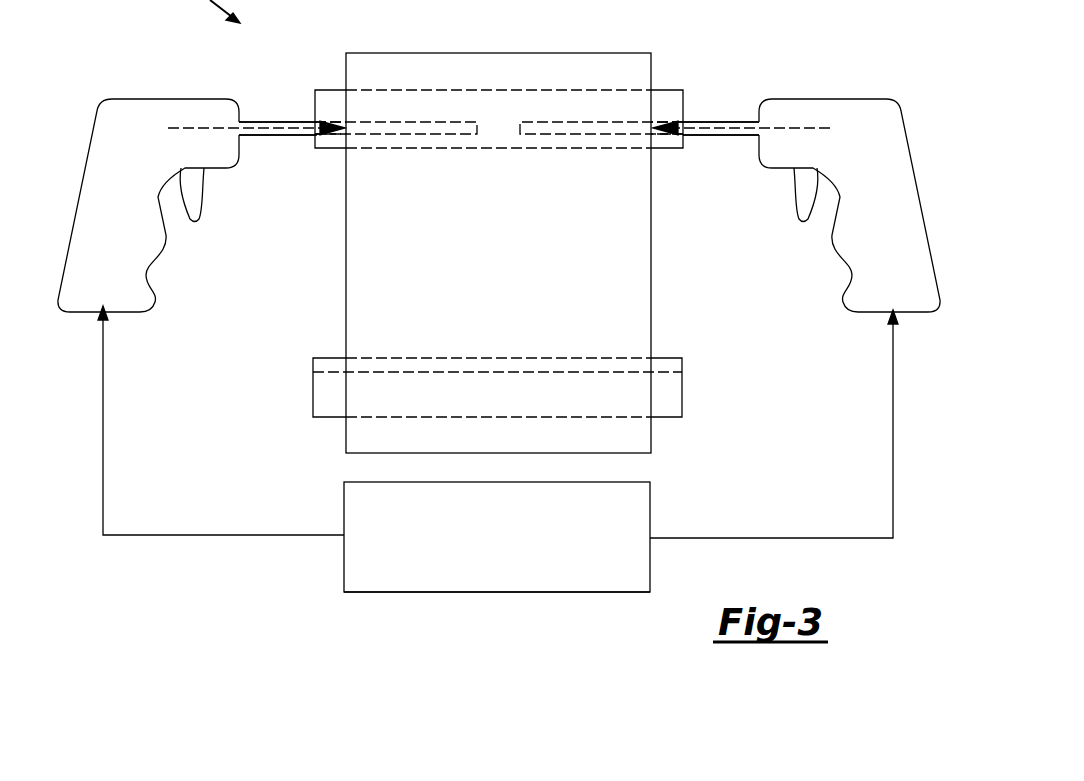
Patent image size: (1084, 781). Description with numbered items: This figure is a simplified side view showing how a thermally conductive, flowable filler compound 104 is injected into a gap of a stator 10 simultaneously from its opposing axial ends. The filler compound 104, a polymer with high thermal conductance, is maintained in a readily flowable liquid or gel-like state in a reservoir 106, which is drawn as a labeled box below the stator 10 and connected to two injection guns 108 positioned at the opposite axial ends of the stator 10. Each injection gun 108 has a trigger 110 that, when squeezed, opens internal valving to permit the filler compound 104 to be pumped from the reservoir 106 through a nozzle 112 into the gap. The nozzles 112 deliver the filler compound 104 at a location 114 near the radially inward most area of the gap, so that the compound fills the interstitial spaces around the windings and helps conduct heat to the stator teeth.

The stator 10 is at (346, 281).
The filler compound 104 is at (368, 566).
The reservoir 106 is at (415, 595).
The injection gun 108 is at (125, 112).
The trigger 110 is at (199, 193).
The nozzle 112 is at (280, 120).
The location 114 is at (345, 135).